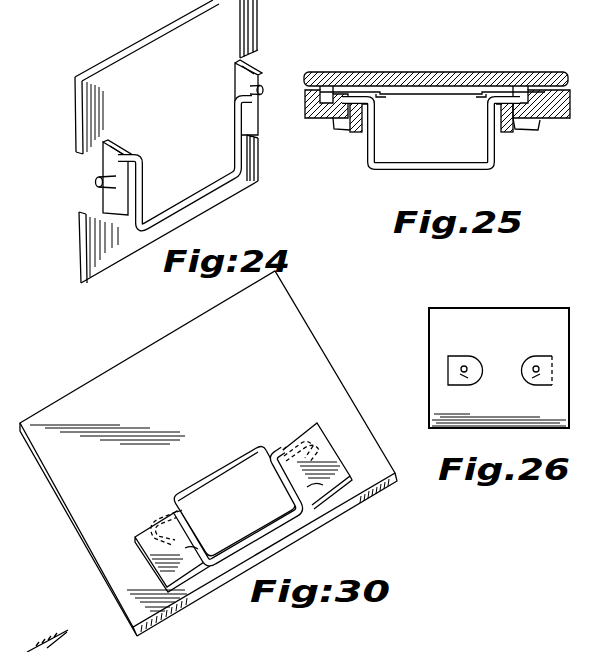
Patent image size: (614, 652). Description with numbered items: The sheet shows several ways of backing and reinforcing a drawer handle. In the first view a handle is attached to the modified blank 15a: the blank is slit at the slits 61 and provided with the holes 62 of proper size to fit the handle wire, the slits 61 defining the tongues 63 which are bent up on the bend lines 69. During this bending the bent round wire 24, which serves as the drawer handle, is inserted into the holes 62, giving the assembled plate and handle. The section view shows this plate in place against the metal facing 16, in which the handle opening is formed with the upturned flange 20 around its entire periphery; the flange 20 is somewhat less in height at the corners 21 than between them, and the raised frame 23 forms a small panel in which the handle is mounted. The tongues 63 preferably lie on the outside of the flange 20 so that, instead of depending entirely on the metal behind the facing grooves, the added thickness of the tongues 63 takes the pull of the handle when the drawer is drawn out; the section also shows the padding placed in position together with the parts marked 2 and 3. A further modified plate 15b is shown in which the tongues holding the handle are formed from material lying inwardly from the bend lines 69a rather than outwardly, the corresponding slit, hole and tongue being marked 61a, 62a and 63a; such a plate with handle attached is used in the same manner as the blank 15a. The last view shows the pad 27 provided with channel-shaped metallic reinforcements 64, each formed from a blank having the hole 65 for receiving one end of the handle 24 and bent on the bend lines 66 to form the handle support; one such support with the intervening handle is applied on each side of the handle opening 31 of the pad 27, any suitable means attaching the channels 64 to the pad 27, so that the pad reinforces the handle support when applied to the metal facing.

In FIG. 25, the casing body 2 is at (565, 75).
In FIG. 25, the cover plate 3 is at (423, 72).
In FIG. 24, the blank 15a is at (166, 141).
In FIG. 25, the blank 15a is at (346, 86).
In FIG. 26, the plate 15b is at (487, 303).
In FIG. 25, the facing 16 is at (567, 122).
In FIG. 25, the upturned flange 20 is at (366, 122).
In FIG. 25, the corners 21 is at (378, 96).
In FIG. 25, the frame 23 is at (338, 130).
In FIG. 24, the bent round wire 24 is at (175, 207).
In FIG. 25, the bent round wire 24 is at (436, 170).
In FIG. 30, the bent round wire 24 is at (237, 536).
In FIG. 30, the pad 27 is at (208, 453).
In FIG. 30, the handle opening 31 is at (234, 501).
In FIG. 24, the slits 61 is at (250, 58).
In FIG. 24, the holes 62 is at (263, 90).
In FIG. 24, the tongues 63 is at (240, 80).
In FIG. 25, the tongues 63 is at (352, 133).
In FIG. 30, the metallic reinforcements 64 is at (337, 466).
In FIG. 30, the hole 65 is at (285, 452).
In FIG. 30, the bend lines 66 is at (322, 486).
In FIG. 24, the bend lines 69 is at (239, 87).
In FIG. 26, the tab 61a is at (541, 357).
In FIG. 26, the hole 62a is at (527, 370).
In FIG. 26, the slot 63a is at (522, 378).
In FIG. 26, the bend lines 69a is at (553, 367).